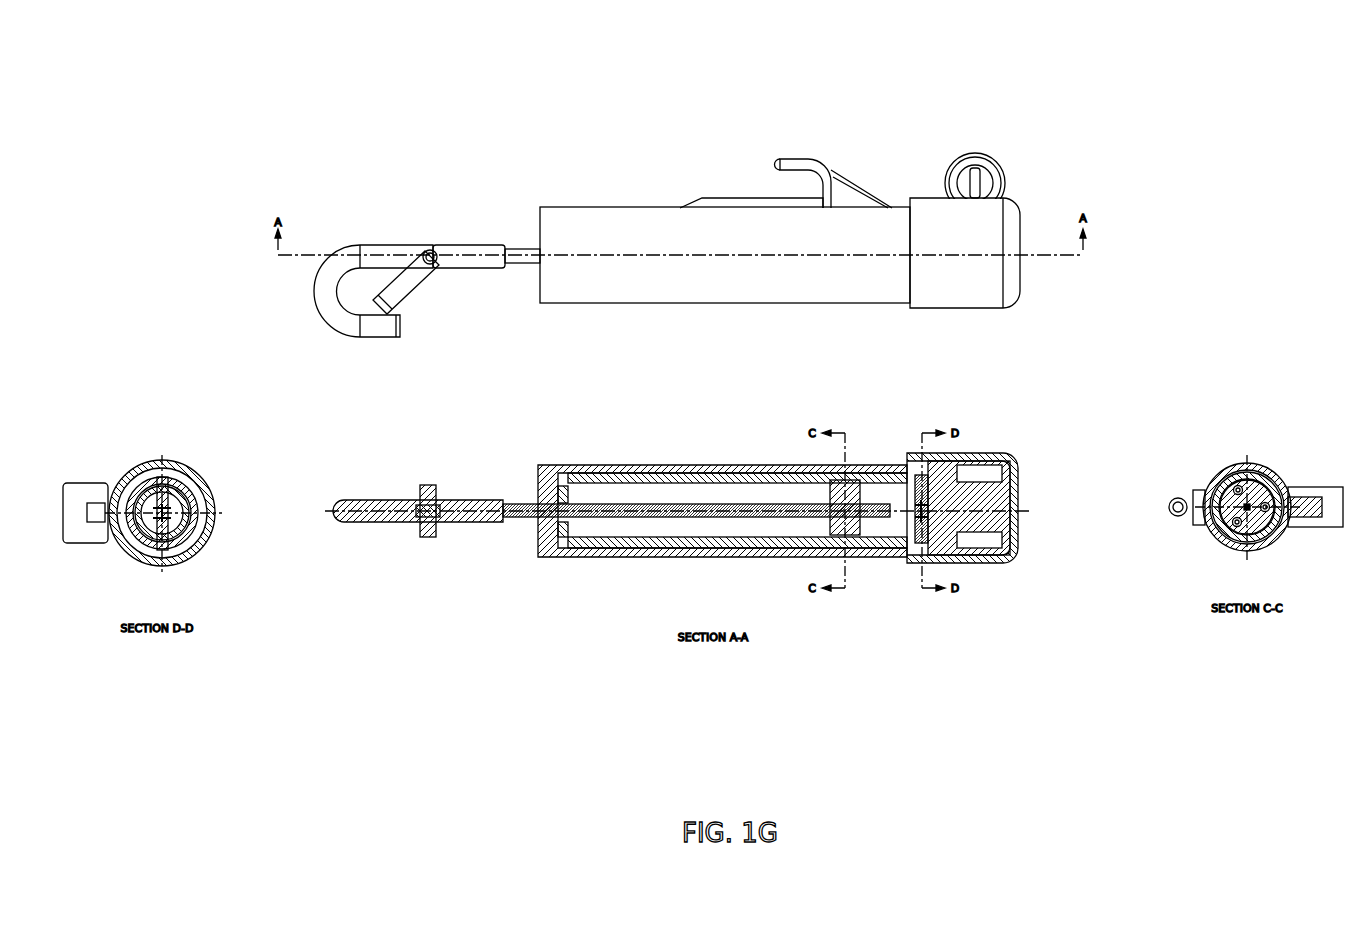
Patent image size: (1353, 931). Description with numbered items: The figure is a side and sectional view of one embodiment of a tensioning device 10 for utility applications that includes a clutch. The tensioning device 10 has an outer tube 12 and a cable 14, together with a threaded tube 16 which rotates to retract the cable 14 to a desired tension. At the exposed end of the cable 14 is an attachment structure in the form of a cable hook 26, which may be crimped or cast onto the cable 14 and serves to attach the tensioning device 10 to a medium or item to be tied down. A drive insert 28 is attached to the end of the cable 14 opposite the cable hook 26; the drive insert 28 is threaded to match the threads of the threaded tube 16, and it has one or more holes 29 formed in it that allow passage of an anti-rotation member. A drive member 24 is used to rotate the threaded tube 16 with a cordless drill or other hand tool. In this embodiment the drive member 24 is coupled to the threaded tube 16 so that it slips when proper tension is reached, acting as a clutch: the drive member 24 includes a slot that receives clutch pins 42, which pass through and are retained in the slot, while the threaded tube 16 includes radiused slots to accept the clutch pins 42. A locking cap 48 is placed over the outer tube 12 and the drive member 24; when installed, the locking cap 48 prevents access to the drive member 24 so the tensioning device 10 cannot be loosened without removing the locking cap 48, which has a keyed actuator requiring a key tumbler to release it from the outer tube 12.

The tensioning device 10 is at (704, 114).
The outer tube 12 is at (743, 296).
The cable 14 is at (517, 268).
The threaded tube 16 is at (690, 480).
The drive member 24 is at (1001, 523).
The cable hook 26 is at (463, 240).
The drive insert 28 is at (862, 468).
The holes 29 is at (1236, 490).
The clutch pins 42 is at (161, 478).
The locking cap 48 is at (1022, 218).